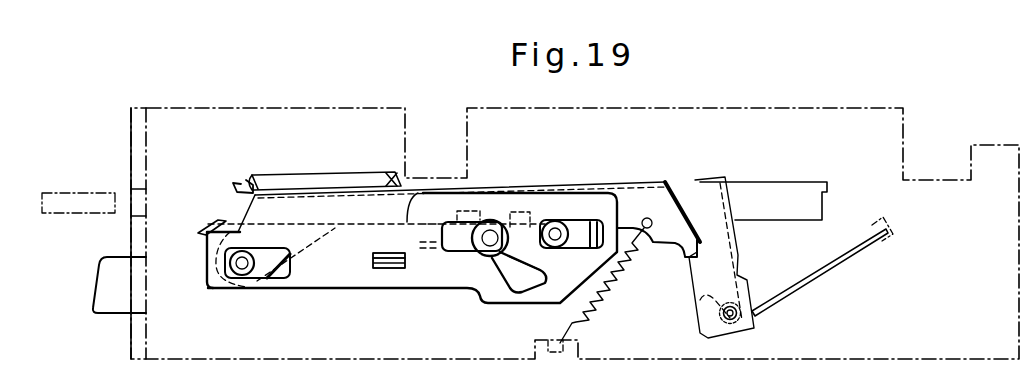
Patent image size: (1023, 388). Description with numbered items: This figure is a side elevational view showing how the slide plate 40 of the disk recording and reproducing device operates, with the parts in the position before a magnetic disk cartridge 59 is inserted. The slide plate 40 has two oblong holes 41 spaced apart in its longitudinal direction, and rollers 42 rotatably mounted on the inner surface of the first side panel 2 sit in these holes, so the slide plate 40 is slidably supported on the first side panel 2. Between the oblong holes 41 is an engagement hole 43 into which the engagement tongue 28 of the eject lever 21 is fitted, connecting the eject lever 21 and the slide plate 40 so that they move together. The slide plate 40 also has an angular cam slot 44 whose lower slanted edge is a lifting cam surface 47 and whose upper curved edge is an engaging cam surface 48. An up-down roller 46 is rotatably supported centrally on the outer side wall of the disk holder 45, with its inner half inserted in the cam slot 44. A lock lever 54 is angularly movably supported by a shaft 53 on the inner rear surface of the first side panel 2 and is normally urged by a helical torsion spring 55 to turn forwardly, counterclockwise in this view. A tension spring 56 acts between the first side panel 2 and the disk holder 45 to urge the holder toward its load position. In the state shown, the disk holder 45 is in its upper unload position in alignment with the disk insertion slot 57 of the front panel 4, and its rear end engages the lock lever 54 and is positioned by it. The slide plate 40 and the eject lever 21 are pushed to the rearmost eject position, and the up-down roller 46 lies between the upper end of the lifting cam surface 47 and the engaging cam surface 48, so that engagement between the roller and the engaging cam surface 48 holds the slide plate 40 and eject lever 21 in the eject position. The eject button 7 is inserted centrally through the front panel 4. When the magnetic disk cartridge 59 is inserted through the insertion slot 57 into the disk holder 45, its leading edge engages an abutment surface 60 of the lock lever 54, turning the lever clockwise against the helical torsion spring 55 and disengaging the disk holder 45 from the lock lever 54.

The first side panel 2 is at (290, 348).
The front panel 4 is at (137, 345).
The eject button 7 is at (103, 277).
The eject lever 21 is at (378, 302).
The engagement tongue 28 is at (378, 270).
The slide plate 40 is at (328, 278).
The oblong holes 41 is at (282, 278).
The rollers 42 is at (240, 278).
The engagement hole 43 is at (398, 270).
The angular cam slot 44 is at (530, 278).
The disk holder 45 is at (328, 181).
The up-down roller 46 is at (487, 262).
The lifting cam surface 47 is at (503, 280).
The engaging cam surface 48 is at (493, 236).
The shaft 53 is at (735, 325).
The lock lever 54 is at (685, 188).
The helical torsion spring 55 is at (776, 302).
The tension spring 56 is at (600, 292).
The disk insertion slot 57 is at (143, 205).
The magnetic disk cartridge 59 is at (95, 191).
The abutment surface 60 is at (735, 198).